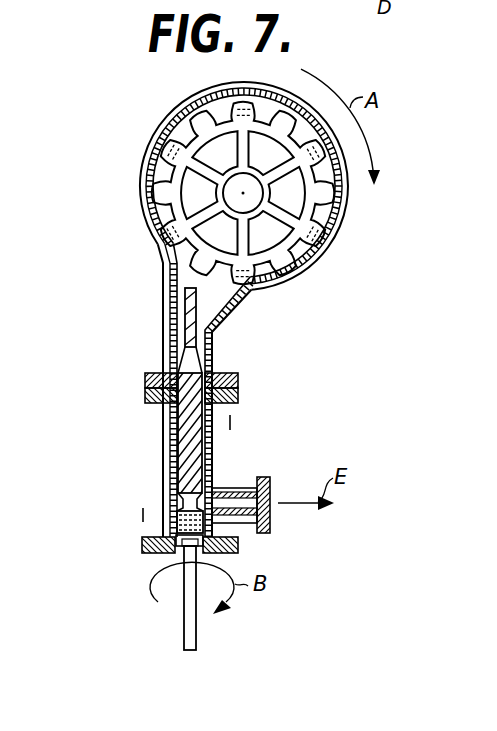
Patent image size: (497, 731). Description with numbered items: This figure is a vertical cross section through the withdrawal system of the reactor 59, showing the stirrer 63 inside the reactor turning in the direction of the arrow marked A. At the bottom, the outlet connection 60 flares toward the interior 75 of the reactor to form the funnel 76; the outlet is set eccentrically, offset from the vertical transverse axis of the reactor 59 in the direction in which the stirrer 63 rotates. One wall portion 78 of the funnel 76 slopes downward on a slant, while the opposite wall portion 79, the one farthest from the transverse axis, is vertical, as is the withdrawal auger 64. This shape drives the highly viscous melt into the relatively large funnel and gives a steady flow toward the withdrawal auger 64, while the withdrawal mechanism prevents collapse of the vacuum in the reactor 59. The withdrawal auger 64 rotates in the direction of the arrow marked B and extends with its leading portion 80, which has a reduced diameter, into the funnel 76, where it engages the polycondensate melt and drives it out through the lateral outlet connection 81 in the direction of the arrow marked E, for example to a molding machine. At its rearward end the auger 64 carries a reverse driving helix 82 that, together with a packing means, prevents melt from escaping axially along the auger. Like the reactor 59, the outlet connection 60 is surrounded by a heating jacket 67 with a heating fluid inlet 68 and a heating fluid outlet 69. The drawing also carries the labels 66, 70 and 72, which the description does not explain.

The reactor 59 is at (140, 181).
The outlet connection 60 is at (165, 442).
The stirrer 63 is at (233, 186).
The withdrawal auger 64 is at (183, 588).
The housing inner wall 66 is at (333, 252).
The heating jacket 67 is at (340, 226).
The heating fluid inlet 68 is at (218, 425).
The heating fluid outlet 69 is at (157, 517).
The gear tooth 70 is at (317, 193).
The tooth insert 72 is at (243, 103).
The interior of the reactor 75 is at (163, 247).
The funnel 76 is at (218, 308).
The wall portion of the funnel 78 is at (232, 327).
The opposite wall portion 79 is at (184, 312).
The leading portion of the auger 80 is at (204, 353).
The lateral outlet connection 81 is at (267, 503).
The reverse driving helix 82 is at (143, 538).